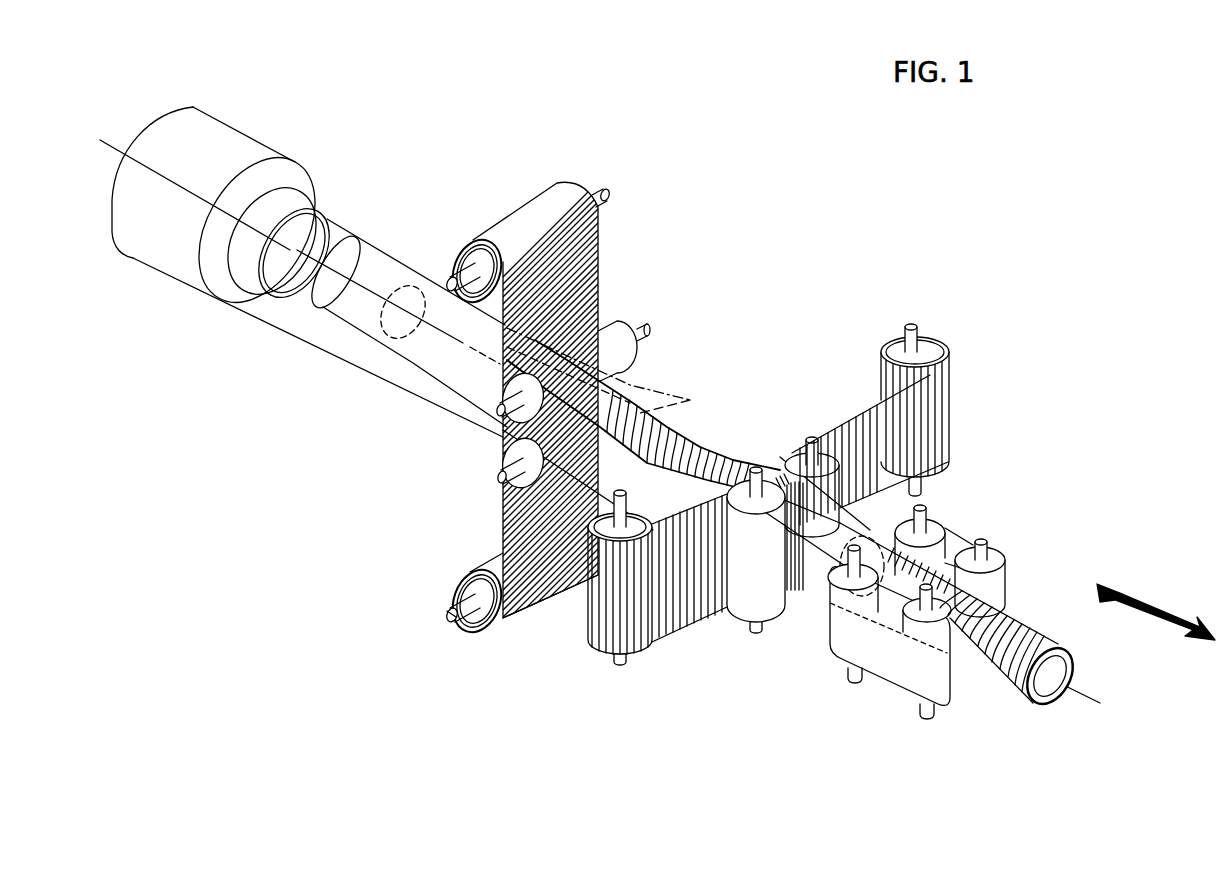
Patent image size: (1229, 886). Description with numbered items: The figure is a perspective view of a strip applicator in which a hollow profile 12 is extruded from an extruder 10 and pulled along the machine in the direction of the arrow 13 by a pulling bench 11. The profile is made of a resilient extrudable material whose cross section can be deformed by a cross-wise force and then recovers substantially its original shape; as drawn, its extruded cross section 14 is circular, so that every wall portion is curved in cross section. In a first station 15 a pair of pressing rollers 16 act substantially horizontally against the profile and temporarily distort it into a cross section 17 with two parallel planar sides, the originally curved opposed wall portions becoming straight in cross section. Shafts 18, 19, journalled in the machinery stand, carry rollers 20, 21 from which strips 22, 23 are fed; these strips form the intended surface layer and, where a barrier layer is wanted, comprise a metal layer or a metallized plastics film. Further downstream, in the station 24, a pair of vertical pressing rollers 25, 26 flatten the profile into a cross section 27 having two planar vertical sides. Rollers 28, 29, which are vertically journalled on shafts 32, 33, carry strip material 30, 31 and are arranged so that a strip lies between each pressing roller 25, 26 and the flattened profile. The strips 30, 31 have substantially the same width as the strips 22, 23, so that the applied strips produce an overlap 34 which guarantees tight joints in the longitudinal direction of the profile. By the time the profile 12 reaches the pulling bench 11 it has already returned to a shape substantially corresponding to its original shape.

The extruder 10 is at (250, 148).
The pulling bench 11 is at (973, 530).
The hollow profile 12 is at (386, 262).
The arrow 13 is at (1138, 592).
The extruded cross section 14 is at (375, 327).
The first station 15 is at (497, 457).
The pressing rollers 16 is at (600, 440).
The cross section 17 is at (690, 400).
The shaft 18 is at (600, 190).
The shaft 19 is at (452, 612).
The roller 20 is at (471, 245).
The roller 21 is at (455, 587).
The strip 22 is at (573, 272).
The strip 23 is at (545, 545).
The station 24 is at (790, 590).
The pressing roller 25 is at (753, 600).
The vertical pressing rollers 26 is at (837, 497).
The cross section 27 is at (877, 517).
The roller 28 is at (942, 345).
The roller 29 is at (623, 532).
The strip material 30 is at (857, 430).
The strip material 31 is at (670, 597).
The shaft 32 is at (910, 327).
The shaft 33 is at (627, 527).
The overlap 34 is at (790, 487).